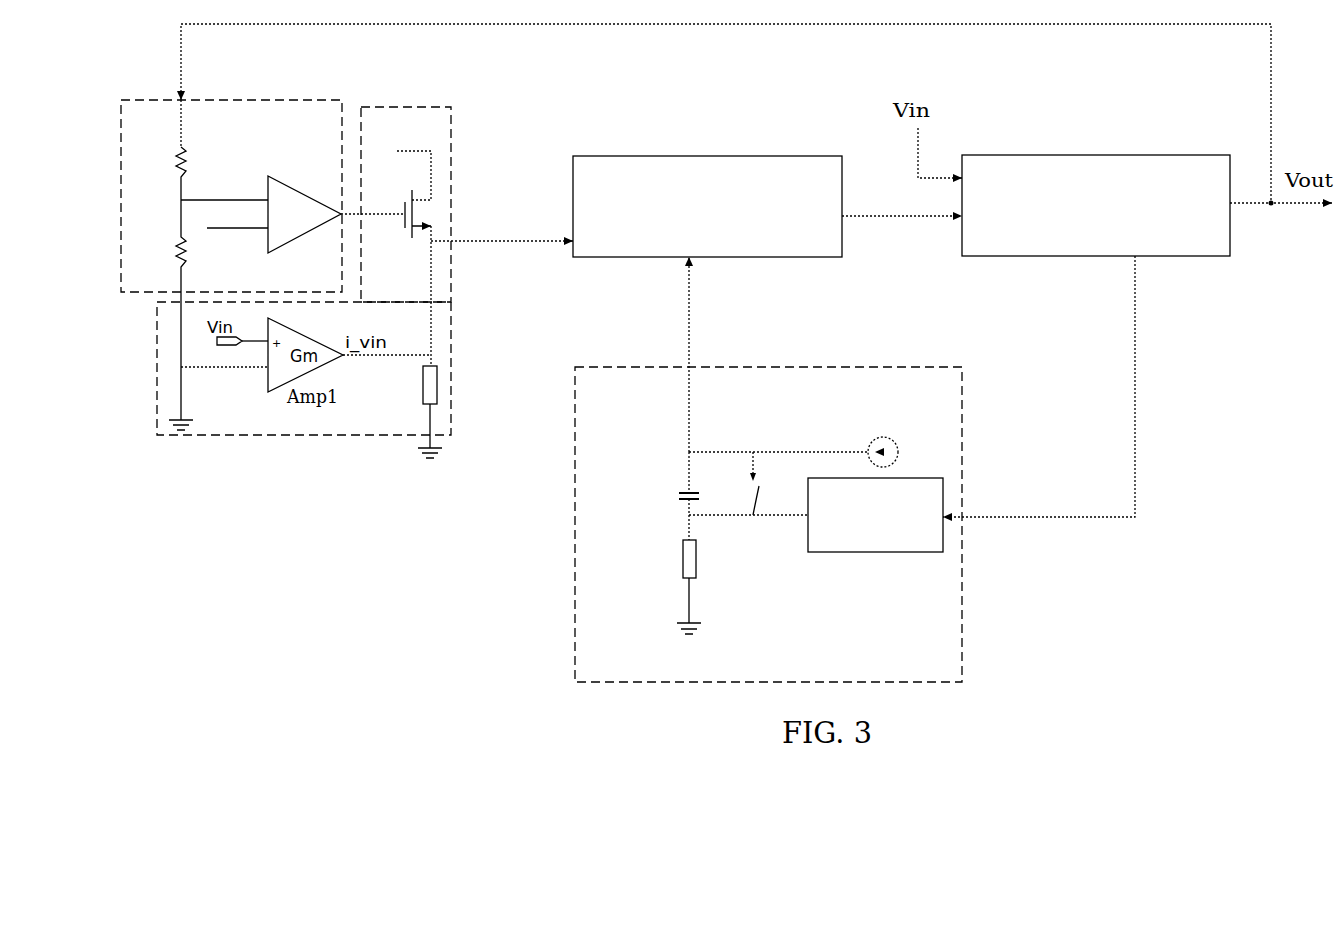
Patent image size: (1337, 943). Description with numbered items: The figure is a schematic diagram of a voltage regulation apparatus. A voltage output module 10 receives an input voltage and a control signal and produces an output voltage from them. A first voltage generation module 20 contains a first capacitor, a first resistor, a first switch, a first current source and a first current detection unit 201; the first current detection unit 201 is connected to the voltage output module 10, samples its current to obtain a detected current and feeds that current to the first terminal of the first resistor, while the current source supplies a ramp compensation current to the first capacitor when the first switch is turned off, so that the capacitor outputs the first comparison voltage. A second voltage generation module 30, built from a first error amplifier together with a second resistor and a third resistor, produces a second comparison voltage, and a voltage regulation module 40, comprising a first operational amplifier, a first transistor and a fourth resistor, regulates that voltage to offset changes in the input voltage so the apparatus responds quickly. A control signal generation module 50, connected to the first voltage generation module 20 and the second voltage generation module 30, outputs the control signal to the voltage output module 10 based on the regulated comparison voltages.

The voltage output module 10 is at (1145, 155).
The first voltage generation module 20 is at (760, 367).
The second voltage generation module 30 is at (307, 108).
The voltage regulation module 40 is at (417, 107).
The control signal generation module 50 is at (757, 156).
The first current detection unit 201 is at (897, 489).